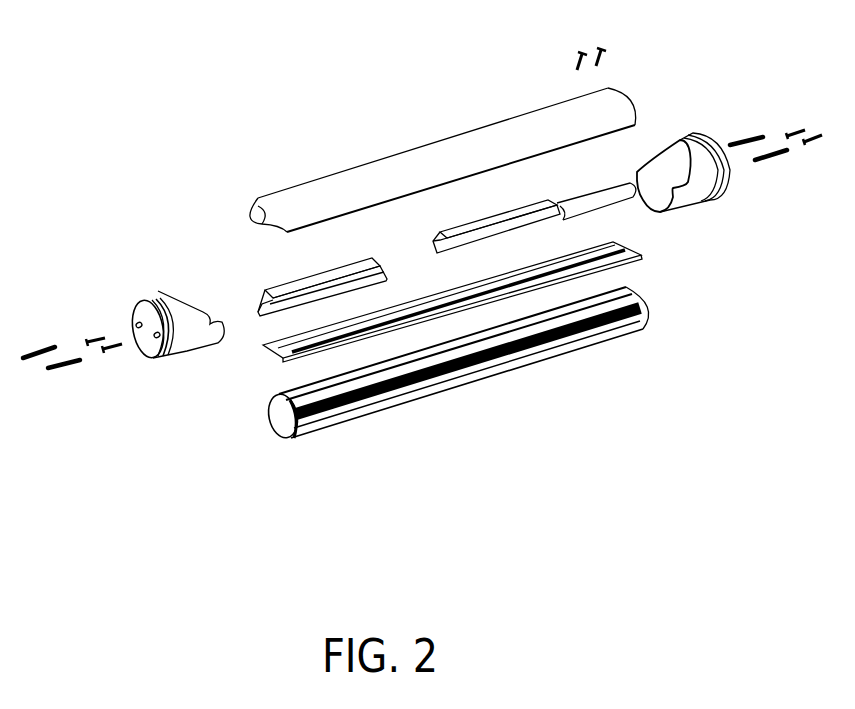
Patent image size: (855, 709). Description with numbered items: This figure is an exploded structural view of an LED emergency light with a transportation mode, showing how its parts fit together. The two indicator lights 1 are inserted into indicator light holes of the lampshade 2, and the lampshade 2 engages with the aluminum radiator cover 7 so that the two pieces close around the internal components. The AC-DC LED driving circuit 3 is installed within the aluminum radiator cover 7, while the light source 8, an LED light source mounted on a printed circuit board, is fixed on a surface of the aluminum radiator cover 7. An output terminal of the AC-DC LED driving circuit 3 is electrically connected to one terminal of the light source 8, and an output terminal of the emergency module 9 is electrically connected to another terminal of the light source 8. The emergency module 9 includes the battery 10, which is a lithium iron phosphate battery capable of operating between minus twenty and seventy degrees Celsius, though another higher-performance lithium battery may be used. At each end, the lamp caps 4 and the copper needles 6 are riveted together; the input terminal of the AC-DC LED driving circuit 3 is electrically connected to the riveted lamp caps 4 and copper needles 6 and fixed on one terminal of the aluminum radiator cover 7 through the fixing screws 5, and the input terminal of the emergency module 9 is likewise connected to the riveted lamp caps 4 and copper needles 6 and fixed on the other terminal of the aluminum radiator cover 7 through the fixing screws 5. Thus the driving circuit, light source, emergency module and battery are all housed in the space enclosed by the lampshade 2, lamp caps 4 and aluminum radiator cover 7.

The indicator lights 1 is at (575, 58).
The lampshade 2 is at (257, 200).
The AC-DC LED driving circuit 3 is at (260, 292).
The lamp caps 4 is at (147, 298).
The fixing screws 5 is at (52, 368).
The copper needles 6 is at (103, 348).
The aluminum radiator cover 7 is at (648, 320).
The light source 8 is at (627, 260).
The emergency module 9 is at (555, 219).
The battery 10 is at (652, 153).